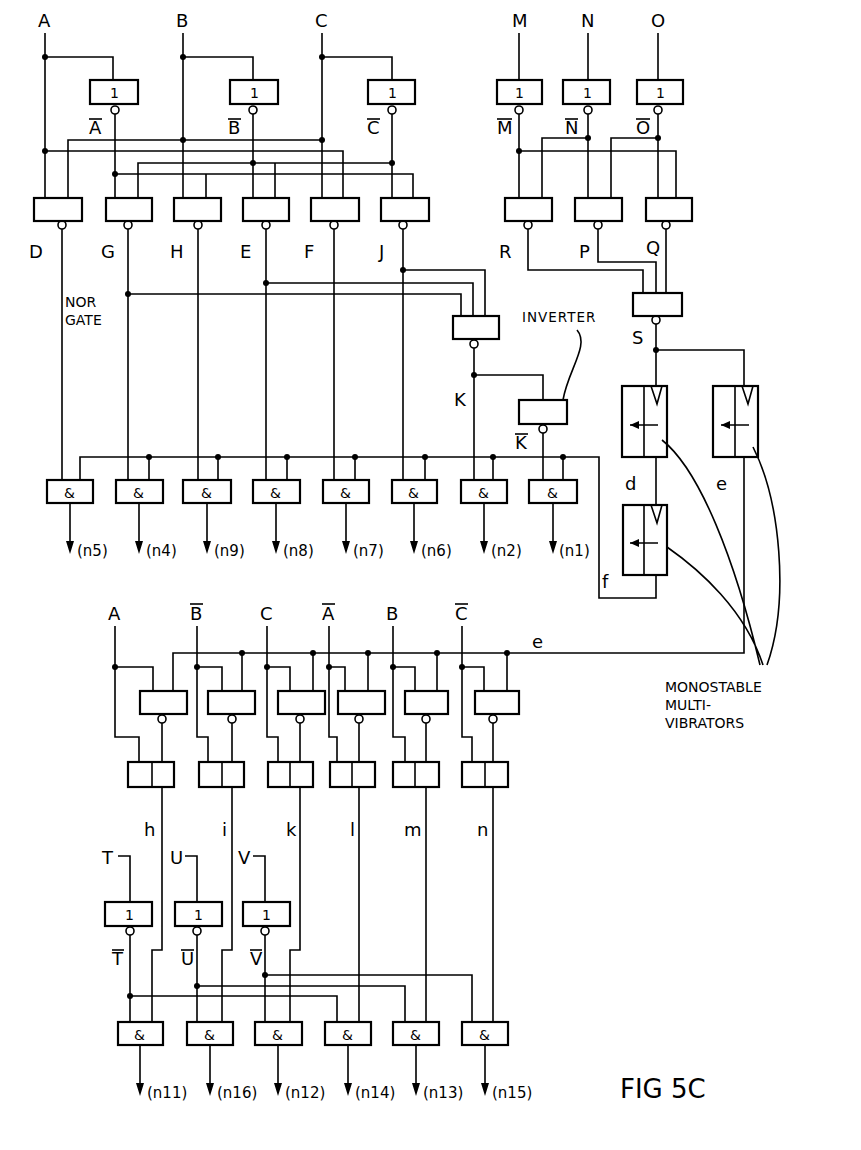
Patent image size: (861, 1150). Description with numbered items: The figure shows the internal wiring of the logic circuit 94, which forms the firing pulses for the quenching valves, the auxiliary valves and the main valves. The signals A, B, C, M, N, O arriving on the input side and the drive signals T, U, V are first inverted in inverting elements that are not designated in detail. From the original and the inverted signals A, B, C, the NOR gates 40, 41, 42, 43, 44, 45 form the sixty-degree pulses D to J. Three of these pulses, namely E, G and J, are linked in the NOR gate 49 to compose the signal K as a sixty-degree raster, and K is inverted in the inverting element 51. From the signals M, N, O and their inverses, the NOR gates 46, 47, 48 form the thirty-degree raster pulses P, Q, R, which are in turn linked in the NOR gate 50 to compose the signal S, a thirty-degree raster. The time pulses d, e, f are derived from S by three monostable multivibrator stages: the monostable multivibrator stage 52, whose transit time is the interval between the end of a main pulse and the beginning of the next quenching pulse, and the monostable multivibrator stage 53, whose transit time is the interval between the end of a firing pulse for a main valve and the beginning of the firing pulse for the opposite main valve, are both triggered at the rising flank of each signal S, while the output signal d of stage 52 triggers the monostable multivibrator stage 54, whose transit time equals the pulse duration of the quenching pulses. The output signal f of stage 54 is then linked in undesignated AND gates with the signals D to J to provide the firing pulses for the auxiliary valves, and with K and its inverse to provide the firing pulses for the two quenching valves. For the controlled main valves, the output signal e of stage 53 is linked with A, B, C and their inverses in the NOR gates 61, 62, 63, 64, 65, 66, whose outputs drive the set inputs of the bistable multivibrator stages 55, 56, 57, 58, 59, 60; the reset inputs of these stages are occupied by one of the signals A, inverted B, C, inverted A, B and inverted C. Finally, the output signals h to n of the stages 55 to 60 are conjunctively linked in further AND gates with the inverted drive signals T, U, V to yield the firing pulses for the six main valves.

The NOR gate 40 is at (87, 285).
The NOR gate 41 is at (143, 222).
The NOR gate 42 is at (212, 222).
The NOR gate 43 is at (280, 222).
The NOR gate 44 is at (350, 222).
The NOR gate 45 is at (420, 222).
The NOR gate 46 is at (543, 222).
The NOR gate 47 is at (613, 222).
The NOR gate 48 is at (683, 222).
The NOR gate 49 is at (499, 338).
The NOR gate 50 is at (682, 305).
The inverting element 51 is at (559, 403).
The monostable multivibrator stage 52 is at (633, 386).
The monostable multivibrator stage 53 is at (722, 386).
The monostable multivibrator stage 54 is at (657, 575).
The bistable multivibrator stage 55 is at (174, 776).
The bistable multivibrator stage 56 is at (244, 776).
The bistable multivibrator stage 57 is at (313, 776).
The bistable multivibrator stage 58 is at (375, 776).
The bistable multivibrator stage 59 is at (439, 776).
The bistable multivibrator stage 60 is at (508, 776).
The NOR gate 61 is at (178, 716).
The NOR gate 62 is at (246, 716).
The NOR gate 63 is at (316, 716).
The NOR gate 64 is at (376, 716).
The NOR gate 65 is at (440, 716).
The NOR gate 66 is at (510, 716).
The logic circuit 94 is at (596, 905).